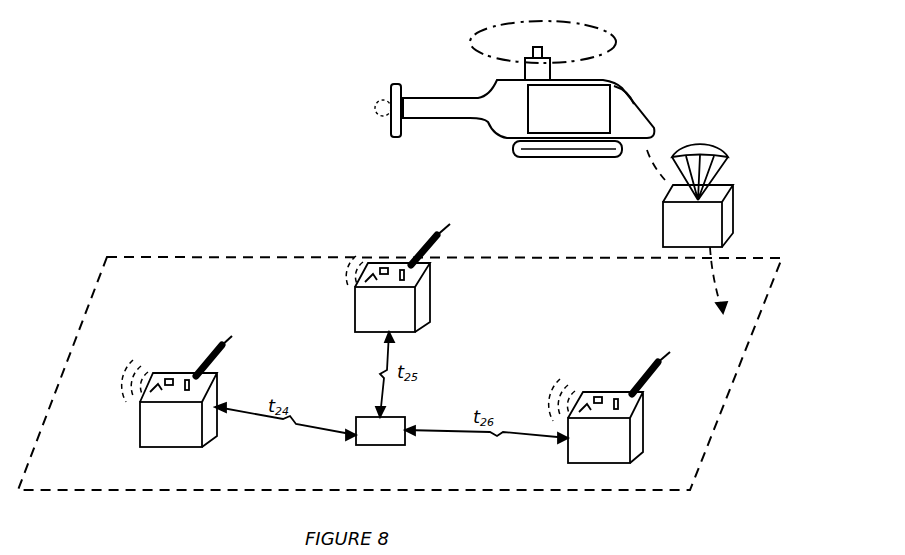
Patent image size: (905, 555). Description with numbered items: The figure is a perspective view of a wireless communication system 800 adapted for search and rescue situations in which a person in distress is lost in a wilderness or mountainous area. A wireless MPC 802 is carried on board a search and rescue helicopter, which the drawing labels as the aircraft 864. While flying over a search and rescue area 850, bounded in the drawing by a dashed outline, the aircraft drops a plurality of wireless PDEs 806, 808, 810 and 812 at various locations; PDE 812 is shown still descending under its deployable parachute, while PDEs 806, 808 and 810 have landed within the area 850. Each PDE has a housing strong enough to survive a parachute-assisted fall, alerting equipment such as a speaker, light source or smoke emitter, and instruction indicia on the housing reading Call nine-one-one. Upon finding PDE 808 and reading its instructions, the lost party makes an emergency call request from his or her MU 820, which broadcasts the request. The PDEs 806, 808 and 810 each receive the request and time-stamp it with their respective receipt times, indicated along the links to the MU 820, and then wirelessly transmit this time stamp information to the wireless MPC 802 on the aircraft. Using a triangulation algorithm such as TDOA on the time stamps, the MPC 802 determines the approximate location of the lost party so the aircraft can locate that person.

The wireless communication system 800 is at (197, 107).
The wireless MPC 802 is at (612, 78).
The helicopter 864 is at (457, 98).
The wireless PDE 806 is at (165, 373).
The wireless PDE 808 is at (433, 283).
The wireless PDE 810 is at (645, 402).
The wireless PDE 812 is at (738, 193).
The MU 820 is at (393, 413).
The search and rescue area 850 is at (358, 486).